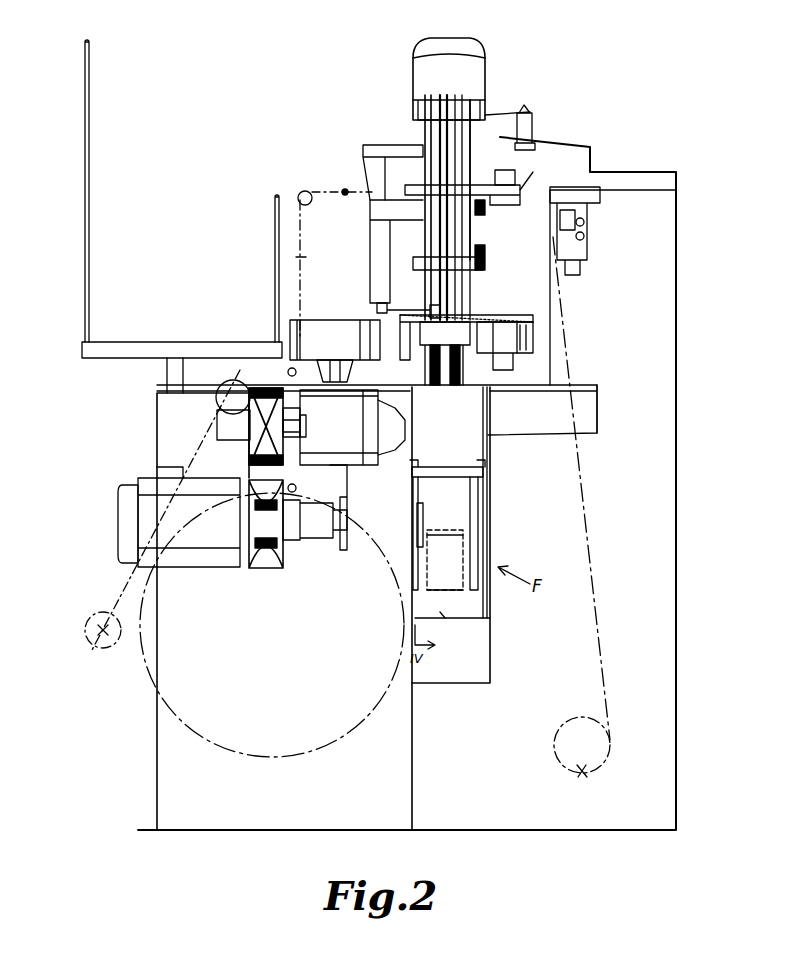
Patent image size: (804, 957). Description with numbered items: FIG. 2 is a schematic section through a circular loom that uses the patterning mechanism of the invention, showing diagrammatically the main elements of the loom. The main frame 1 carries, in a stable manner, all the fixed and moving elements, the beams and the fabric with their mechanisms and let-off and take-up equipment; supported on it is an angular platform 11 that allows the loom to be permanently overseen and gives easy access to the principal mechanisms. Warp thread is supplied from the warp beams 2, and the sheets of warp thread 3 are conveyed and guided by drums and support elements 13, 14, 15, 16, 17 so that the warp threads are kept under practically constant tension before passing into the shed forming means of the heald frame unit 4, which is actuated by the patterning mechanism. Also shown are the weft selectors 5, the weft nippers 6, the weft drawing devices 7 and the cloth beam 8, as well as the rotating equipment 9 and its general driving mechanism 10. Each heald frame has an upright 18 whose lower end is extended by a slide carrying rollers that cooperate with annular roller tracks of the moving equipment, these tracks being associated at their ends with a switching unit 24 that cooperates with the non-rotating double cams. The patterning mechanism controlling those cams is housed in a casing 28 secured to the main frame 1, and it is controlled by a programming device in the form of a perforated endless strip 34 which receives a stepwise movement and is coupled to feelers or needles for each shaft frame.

The main frame 1 is at (146, 807).
The warp beams 2 is at (216, 763).
The sheets of warp thread 3 is at (106, 576).
The heald frame unit 4 is at (410, 141).
The weft selectors 5 is at (590, 223).
The weft nippers 6 is at (450, 180).
The weft drawing devices 7 is at (498, 197).
The cloth beam 8 is at (581, 519).
The rotating equipment 9 is at (513, 309).
The general driving mechanism 10 is at (378, 481).
The angular platform 11 is at (143, 346).
The drum and support element 13 is at (104, 642).
The drum and support element 14 is at (245, 386).
The drum and support element 15 is at (297, 487).
The drum and support element 16 is at (288, 372).
The drum and support element 17 is at (332, 186).
The upright 18 is at (457, 133).
The switching unit 24 is at (455, 335).
The casing 28 is at (443, 621).
The perforated endless strip 34 is at (445, 535).